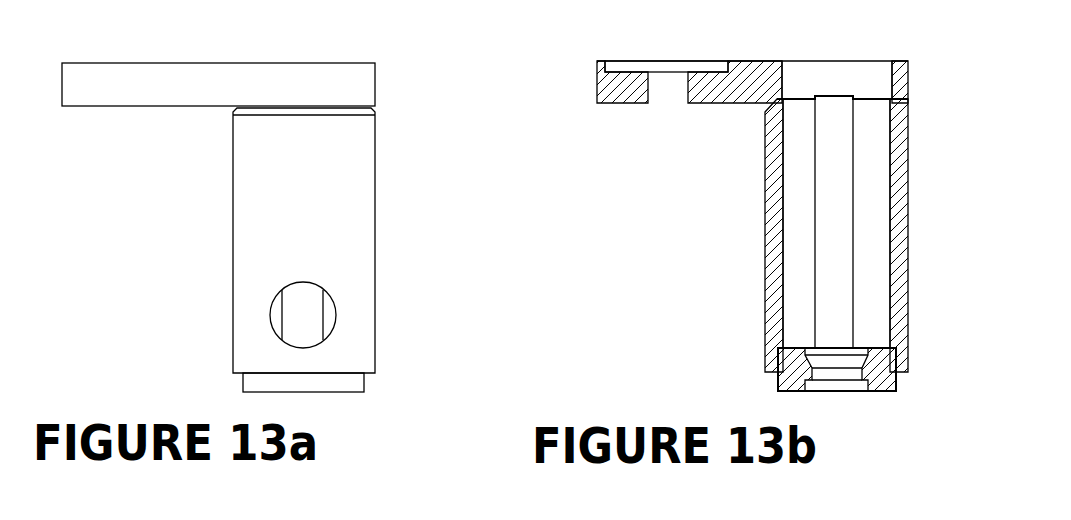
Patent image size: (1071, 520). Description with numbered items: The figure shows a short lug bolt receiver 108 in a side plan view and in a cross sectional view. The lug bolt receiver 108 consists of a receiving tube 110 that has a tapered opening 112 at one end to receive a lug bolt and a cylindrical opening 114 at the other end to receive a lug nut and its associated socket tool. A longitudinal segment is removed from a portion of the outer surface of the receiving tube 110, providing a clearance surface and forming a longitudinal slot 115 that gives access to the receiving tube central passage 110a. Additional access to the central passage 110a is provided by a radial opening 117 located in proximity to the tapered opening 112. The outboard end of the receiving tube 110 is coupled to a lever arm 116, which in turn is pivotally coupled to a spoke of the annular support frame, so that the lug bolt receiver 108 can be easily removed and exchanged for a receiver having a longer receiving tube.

In FIG. 13A, the lug bolt receiver 108 is at (172, 252).
In FIG. 13B, the lug bolt receiver 108 is at (716, 235).
In FIG. 13A, the receiving tube 110 is at (315, 207).
In FIG. 13B, the receiving tube 110 is at (755, 172).
In FIG. 13B, the receiving tube central passage 110a is at (778, 125).
In FIG. 13B, the tapered opening 112 is at (837, 366).
In FIG. 13B, the cylindrical opening 114 is at (831, 76).
In FIG. 13B, the longitudinal slot 115 is at (826, 285).
In FIG. 13A, the lever arm 116 is at (208, 88).
In FIG. 13B, the lever arm 116 is at (611, 88).
In FIG. 13A, the radial opening 117 is at (345, 318).